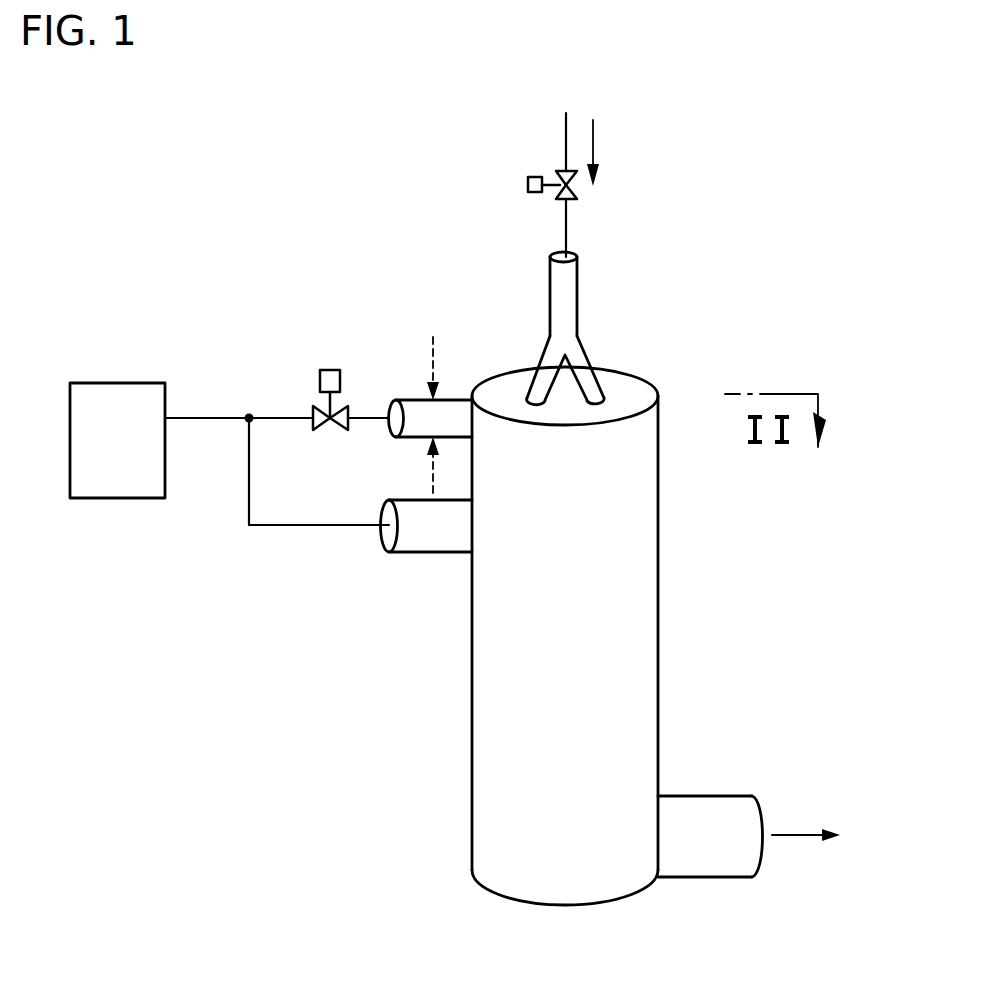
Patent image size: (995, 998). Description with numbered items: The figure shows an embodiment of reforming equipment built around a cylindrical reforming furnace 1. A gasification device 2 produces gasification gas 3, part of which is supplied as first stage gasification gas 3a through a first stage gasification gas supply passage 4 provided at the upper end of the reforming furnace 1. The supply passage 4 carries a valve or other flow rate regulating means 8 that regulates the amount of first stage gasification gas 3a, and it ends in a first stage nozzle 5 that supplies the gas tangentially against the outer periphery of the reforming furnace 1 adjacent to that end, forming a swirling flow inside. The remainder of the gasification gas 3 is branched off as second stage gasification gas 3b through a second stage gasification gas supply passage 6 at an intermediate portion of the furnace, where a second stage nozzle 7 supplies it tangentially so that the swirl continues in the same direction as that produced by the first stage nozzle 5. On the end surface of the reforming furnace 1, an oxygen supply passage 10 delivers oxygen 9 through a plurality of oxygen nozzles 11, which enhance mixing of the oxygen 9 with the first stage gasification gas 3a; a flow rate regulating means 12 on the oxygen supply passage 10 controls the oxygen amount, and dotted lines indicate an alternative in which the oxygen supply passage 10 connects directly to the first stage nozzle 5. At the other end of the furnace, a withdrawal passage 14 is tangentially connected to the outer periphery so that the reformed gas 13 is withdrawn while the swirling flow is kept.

The cylindrical reforming furnace 1 is at (680, 370).
The gasification device 2 is at (108, 383).
The gasification gas 3 is at (212, 398).
The first stage gasification gas 3a is at (268, 398).
The second stage gasification gas 3b is at (328, 508).
The first stage gasification gas supply passage 4 is at (252, 414).
The first stage nozzle 5 is at (408, 398).
The second stage gasification gas supply passage 6 is at (298, 530).
The second stage nozzle 7 is at (415, 542).
The flow rate regulating means 8 is at (330, 370).
The oxygen 9 is at (593, 134).
The oxygen supply passage 10 is at (567, 229).
The oxygen nozzles 11 is at (540, 385).
The flow rate regulating means 12 is at (528, 184).
The reformed gas 13 is at (797, 833).
The withdrawal passage 14 is at (712, 808).